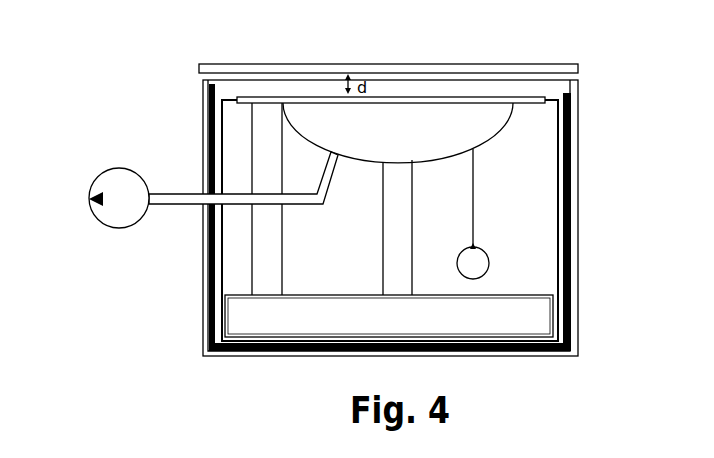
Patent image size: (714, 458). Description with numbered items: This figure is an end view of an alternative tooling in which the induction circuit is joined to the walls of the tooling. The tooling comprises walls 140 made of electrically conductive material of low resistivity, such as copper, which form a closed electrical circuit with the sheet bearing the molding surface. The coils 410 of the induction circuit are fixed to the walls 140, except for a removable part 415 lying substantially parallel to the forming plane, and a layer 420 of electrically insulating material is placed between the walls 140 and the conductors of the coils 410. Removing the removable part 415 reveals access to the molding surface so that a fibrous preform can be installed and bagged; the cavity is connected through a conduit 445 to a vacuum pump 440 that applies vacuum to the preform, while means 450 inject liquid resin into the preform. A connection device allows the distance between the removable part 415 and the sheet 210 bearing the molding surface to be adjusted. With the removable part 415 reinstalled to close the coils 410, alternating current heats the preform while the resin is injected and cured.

The walls 140 is at (550, 171).
The sheet 210 is at (255, 98).
The coils 410 is at (202, 127).
The removable part 415 is at (227, 63).
The layer 420 is at (575, 222).
The vacuum pump 440 is at (120, 168).
The conduit 445 is at (182, 205).
The means for injecting liquid resin 450 is at (473, 228).